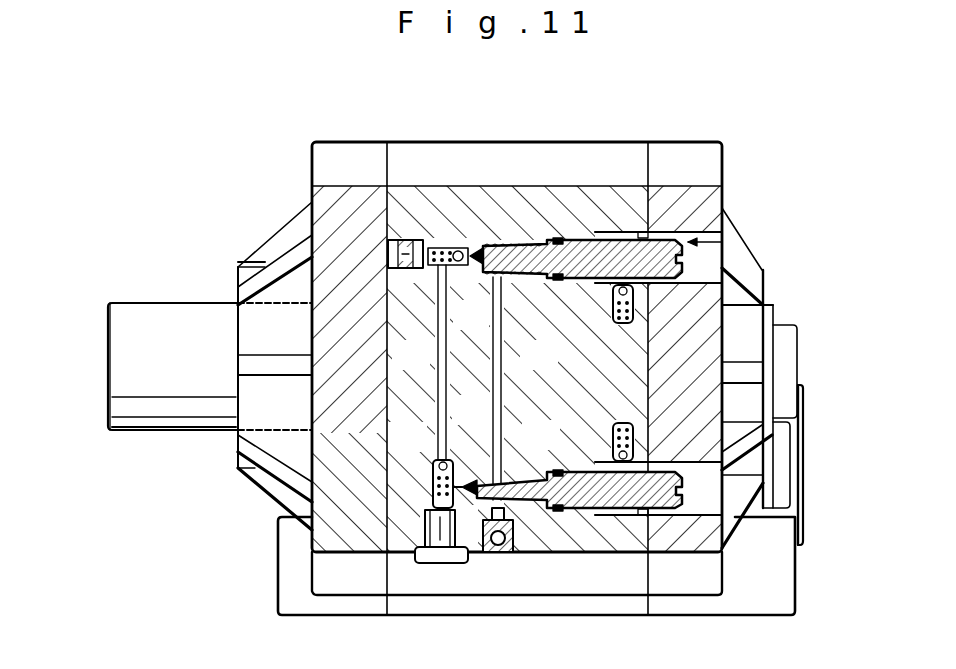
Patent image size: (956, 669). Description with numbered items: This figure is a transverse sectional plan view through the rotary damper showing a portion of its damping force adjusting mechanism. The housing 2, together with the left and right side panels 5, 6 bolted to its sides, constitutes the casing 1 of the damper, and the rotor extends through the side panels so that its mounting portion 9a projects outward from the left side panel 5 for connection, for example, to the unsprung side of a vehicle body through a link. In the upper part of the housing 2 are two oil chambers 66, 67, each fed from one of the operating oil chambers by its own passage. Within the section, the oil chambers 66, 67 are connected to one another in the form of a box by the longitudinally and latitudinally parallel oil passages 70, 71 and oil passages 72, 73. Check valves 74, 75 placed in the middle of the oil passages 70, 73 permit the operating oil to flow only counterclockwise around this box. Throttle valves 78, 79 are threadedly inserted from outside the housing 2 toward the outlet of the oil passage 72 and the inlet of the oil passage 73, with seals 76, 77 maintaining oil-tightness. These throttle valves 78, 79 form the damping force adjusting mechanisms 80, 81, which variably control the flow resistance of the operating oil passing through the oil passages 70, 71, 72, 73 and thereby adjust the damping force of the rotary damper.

The casing 1 is at (712, 138).
The housing 2 is at (513, 187).
The left side panel 5 is at (332, 205).
The right side panel 6 is at (765, 306).
The mounting portion 9a is at (205, 408).
The oil chamber 66 is at (440, 245).
The oil chamber 67 is at (507, 470).
The oil passage 70 is at (438, 380).
The oil passage 71 is at (501, 380).
The oil passage 72 is at (468, 520).
The oil passage 73 is at (466, 254).
The check valve 74 is at (437, 462).
The check valve 75 is at (456, 251).
The seal 76 is at (553, 500).
The seal 77 is at (554, 235).
The throttle valve 78 is at (478, 478).
The throttle valve 79 is at (462, 266).
The damping force adjusting mechanism 80 is at (665, 518).
The damping force adjusting mechanism 81 is at (722, 240).